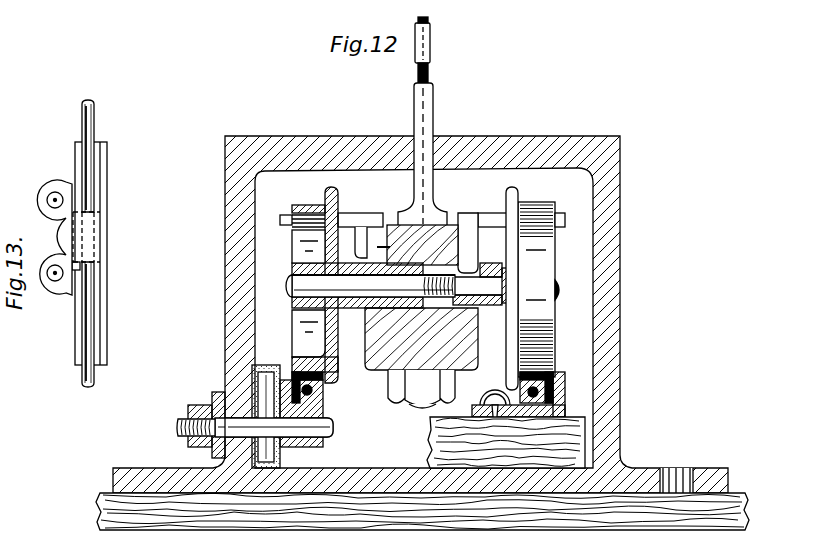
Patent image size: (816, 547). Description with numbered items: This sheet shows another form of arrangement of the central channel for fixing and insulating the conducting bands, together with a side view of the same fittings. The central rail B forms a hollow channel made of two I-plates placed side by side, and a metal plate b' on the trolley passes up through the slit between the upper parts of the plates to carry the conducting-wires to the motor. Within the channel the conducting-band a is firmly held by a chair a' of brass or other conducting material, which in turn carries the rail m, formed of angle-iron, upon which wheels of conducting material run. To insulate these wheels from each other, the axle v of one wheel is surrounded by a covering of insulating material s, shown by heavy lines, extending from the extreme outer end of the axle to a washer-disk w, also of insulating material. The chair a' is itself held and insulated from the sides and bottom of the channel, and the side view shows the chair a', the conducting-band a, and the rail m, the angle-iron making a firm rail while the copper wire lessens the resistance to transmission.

In FIG. 12, the central rail B is at (617, 149).
In FIG. 12, the metal plate b' is at (407, 122).
In FIG. 12, the covering of insulating material s is at (292, 272).
In FIG. 12, the axle v is at (292, 292).
In FIG. 12, the washer-disk w is at (388, 330).
In FIG. 12, the rail m is at (293, 362).
In FIG. 13, the rail m is at (108, 338).
In FIG. 12, the conducting-band a is at (347, 322).
In FIG. 13, the conducting-band a is at (86, 255).
In FIG. 12, the chair a' is at (421, 416).
In FIG. 13, the chair a' is at (54, 237).